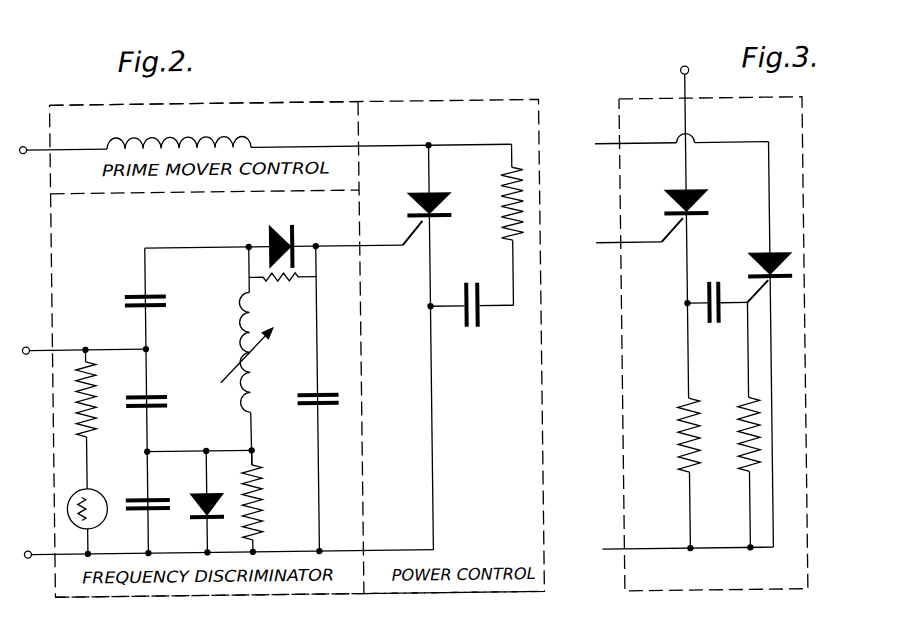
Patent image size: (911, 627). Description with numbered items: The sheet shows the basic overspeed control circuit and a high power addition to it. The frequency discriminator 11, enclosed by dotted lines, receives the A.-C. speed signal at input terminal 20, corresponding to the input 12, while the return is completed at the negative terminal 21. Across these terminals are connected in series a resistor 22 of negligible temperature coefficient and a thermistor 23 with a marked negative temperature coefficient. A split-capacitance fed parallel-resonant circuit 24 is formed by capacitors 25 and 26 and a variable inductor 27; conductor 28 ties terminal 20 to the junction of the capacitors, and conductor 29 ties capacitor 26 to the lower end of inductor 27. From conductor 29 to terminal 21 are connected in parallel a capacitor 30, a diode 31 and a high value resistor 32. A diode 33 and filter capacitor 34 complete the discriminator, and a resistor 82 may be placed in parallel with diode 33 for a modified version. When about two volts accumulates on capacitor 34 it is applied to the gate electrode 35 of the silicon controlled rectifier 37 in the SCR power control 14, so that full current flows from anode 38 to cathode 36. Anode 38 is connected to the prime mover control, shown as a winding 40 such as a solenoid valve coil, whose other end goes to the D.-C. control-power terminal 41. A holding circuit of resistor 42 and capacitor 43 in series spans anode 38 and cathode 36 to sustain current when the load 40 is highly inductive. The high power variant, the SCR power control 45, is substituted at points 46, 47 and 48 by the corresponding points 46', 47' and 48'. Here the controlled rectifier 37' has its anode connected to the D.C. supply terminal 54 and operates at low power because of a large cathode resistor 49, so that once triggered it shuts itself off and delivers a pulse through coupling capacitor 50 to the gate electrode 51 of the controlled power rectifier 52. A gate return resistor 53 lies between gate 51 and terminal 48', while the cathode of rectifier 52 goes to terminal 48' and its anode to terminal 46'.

In FIG. 2, the speed signal input 12 is at (283, 97).
In FIG. 2, the frequency discriminator 11 is at (268, 593).
In FIG. 2, the SCR power control 14 is at (465, 593).
In FIG. 2, the D.-C. control-power terminal 41 is at (25, 140).
In FIG. 2, the winding 40 is at (231, 135).
In FIG. 2, the point 46 is at (269, 144).
In FIG. 2, the silicon controlled rectifier 37 is at (440, 347).
In FIG. 2, the anode 38 is at (432, 192).
In FIG. 2, the cathode 36 is at (434, 218).
In FIG. 2, the gate electrode 35 is at (413, 237).
In FIG. 2, the point 47 is at (358, 233).
In FIG. 2, the resistor 42 is at (503, 200).
In FIG. 2, the capacitor 43 is at (482, 312).
In FIG. 2, the point 48 is at (232, 540).
In FIG. 2, the diode 33 is at (289, 222).
In FIG. 2, the resistor 82 is at (298, 279).
In FIG. 2, the parallel-resonant circuit 24 is at (205, 352).
In FIG. 2, the inductor 27 is at (241, 299).
In FIG. 2, the capacitor 25 is at (129, 291).
In FIG. 2, the capacitor 26 is at (154, 391).
In FIG. 2, the conductor 28 is at (125, 340).
In FIG. 2, the input terminal 20 is at (26, 341).
In FIG. 2, the negative terminal 21 is at (38, 530).
In FIG. 2, the resistor 22 is at (96, 380).
In FIG. 2, the thermistor 23 is at (102, 522).
In FIG. 2, the conductor 29 is at (196, 448).
In FIG. 2, the capacitor 30 is at (178, 474).
In FIG. 2, the diode 31 is at (226, 515).
In FIG. 2, the resistor 32 is at (263, 499).
In FIG. 2, the filter capacitor 34 is at (299, 400).
In FIG. 3, the SCR power control 45 is at (720, 593).
In FIG. 3, the D.C. supply terminal 54 is at (691, 74).
In FIG. 3, the point 46' is at (682, 186).
In FIG. 3, the controlled rectifier 37' is at (705, 293).
In FIG. 3, the point 47' is at (629, 229).
In FIG. 3, the controlled power rectifier 52 is at (754, 265).
In FIG. 3, the coupling capacitor 50 is at (719, 285).
In FIG. 3, the gate electrode 51 is at (757, 293).
In FIG. 3, the cathode resistor 49 is at (677, 423).
In FIG. 3, the gate return resistor 53 is at (738, 423).
In FIG. 3, the terminal 48' is at (687, 538).